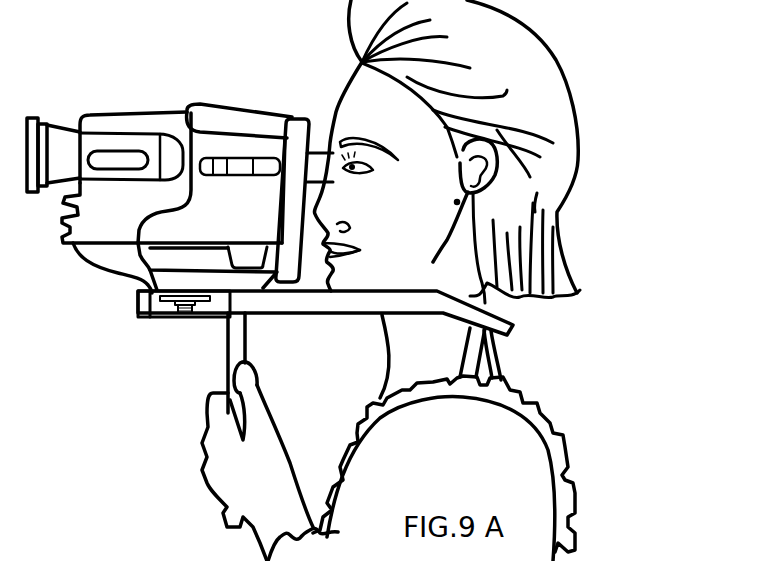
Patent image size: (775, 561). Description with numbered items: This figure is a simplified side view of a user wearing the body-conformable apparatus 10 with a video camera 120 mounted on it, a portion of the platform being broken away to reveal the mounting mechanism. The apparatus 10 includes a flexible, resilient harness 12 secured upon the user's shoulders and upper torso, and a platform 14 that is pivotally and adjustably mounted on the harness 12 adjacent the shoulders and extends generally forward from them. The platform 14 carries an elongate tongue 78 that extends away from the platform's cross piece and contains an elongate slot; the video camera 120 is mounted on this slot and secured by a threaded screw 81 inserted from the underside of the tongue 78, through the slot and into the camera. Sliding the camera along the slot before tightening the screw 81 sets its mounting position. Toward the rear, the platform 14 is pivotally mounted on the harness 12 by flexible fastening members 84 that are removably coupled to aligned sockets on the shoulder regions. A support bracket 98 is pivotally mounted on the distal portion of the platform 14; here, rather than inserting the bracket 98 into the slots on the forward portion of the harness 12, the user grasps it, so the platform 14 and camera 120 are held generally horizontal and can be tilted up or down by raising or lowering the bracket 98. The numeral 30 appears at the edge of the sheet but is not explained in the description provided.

The video camera 120 is at (148, 112).
The body-conformable apparatus 10 is at (557, 345).
The harness 12 is at (570, 408).
The platform 14 is at (347, 326).
The tongue 78 is at (137, 302).
The threaded screw 81 is at (187, 320).
The flexible fastening members 84 is at (463, 330).
The support bracket 98 is at (227, 358).
The support member 30 is at (15, 473).